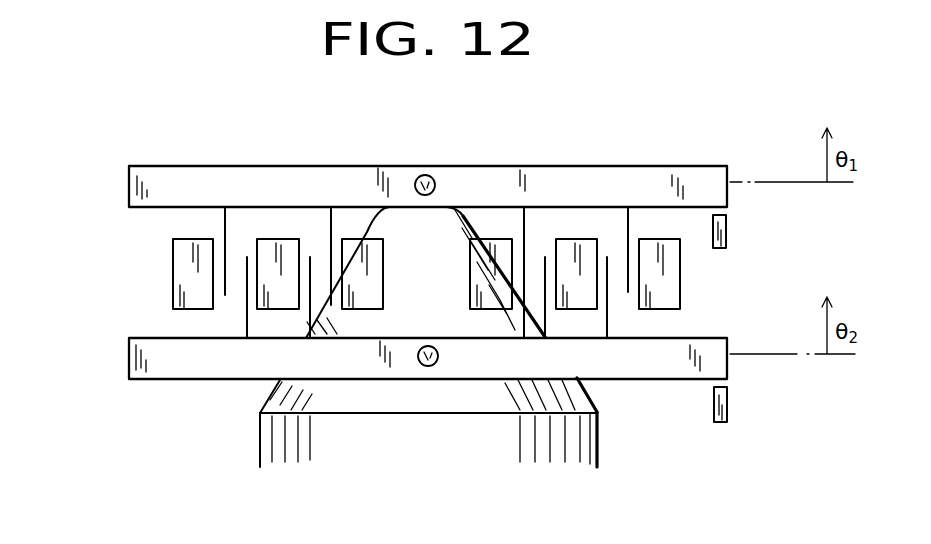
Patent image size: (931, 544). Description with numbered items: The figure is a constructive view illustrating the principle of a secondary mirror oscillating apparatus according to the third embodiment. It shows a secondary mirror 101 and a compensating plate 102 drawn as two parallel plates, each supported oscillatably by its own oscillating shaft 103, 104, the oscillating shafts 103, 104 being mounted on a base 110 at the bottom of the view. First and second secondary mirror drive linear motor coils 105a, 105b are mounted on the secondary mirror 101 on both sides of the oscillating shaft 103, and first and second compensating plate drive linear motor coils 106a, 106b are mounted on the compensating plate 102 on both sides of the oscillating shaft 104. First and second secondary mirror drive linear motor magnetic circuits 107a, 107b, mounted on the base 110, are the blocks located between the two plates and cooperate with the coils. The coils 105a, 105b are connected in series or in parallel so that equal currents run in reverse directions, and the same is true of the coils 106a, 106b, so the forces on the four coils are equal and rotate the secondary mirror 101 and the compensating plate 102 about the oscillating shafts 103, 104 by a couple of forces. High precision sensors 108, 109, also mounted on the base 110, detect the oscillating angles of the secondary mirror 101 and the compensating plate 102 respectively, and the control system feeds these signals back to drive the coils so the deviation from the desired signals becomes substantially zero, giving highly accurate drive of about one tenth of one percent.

The secondary mirror 101 is at (153, 167).
The compensating plate 102 is at (161, 374).
The oscillating shaft 103 is at (425, 167).
The oscillating shaft 104 is at (429, 366).
The first secondary mirror drive linear motor coil 105a is at (238, 208).
The second secondary mirror drive linear motor coil 105b is at (542, 208).
The first compensating plate drive linear motor coil 106a is at (310, 318).
The second compensating plate drive linear motor coil 106b is at (607, 308).
The first secondary mirror drive linear motor magnetic circuit 107a is at (275, 247).
The second secondary mirror drive linear motor magnetic circuit 107b is at (578, 240).
The high precision sensor 108 is at (727, 232).
The high precision sensor 109 is at (727, 405).
The base 110 is at (267, 447).